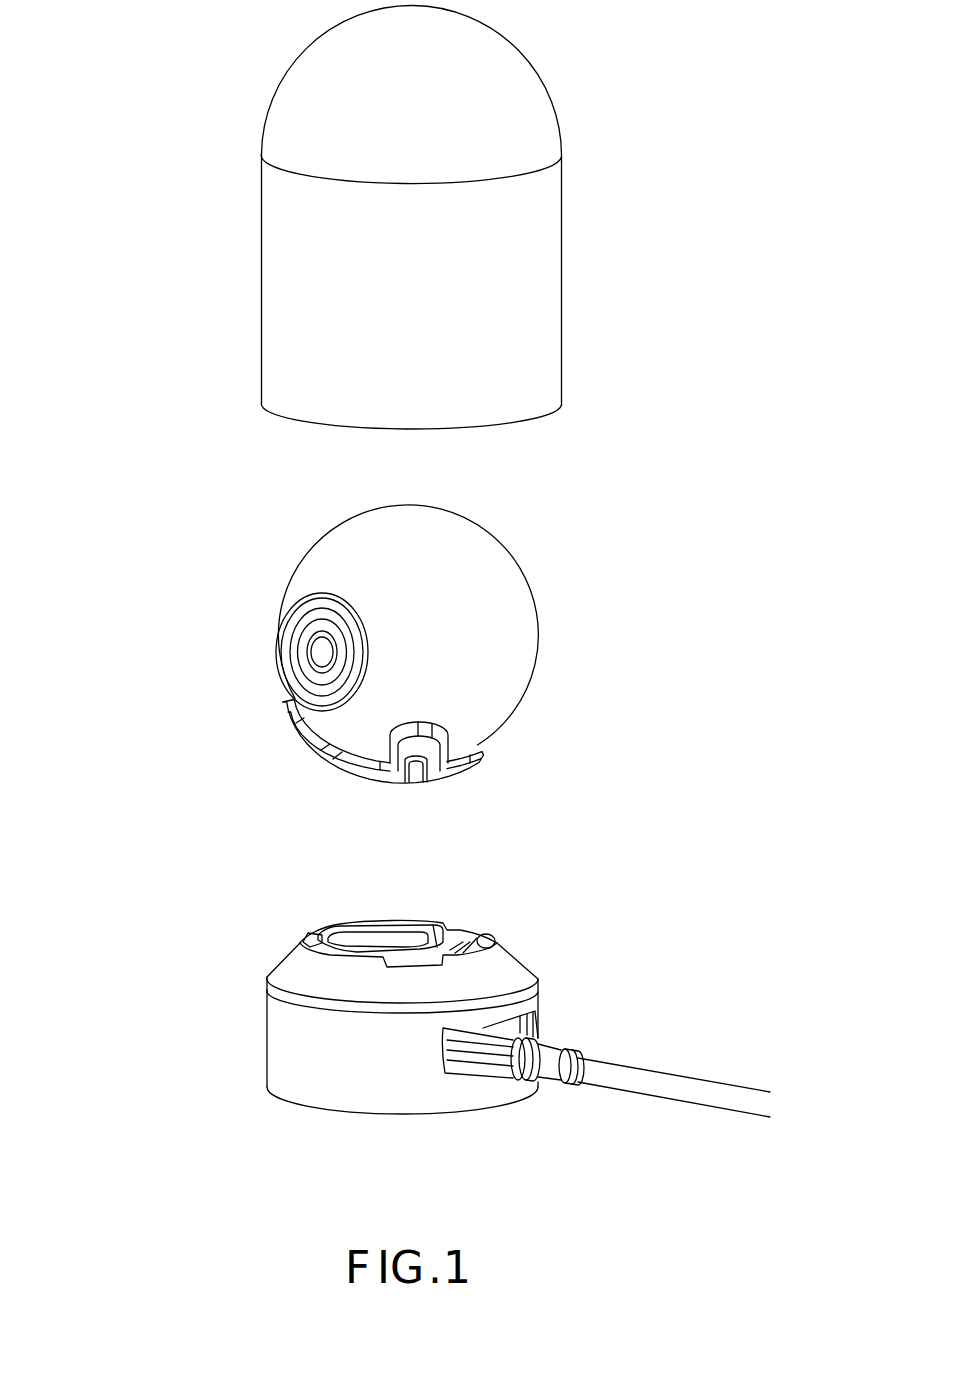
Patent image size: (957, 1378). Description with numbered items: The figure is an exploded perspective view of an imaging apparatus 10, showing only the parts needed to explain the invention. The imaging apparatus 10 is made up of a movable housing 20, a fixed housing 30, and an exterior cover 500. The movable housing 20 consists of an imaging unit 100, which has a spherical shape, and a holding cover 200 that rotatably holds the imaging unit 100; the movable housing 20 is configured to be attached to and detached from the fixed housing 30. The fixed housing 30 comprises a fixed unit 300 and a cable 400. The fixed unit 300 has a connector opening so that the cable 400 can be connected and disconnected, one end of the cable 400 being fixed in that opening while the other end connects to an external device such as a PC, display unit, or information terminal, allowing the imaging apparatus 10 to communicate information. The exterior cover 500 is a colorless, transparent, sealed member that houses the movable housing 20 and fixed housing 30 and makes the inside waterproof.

The imaging apparatus 10 is at (411, 1176).
The movable housing 20 is at (183, 604).
The fixed housing 30 is at (220, 986).
The imaging unit 100 is at (525, 587).
The holding cover 200 is at (482, 758).
The fixed unit 300 is at (517, 955).
The cable 400 is at (617, 1062).
The exterior cover 500 is at (561, 265).